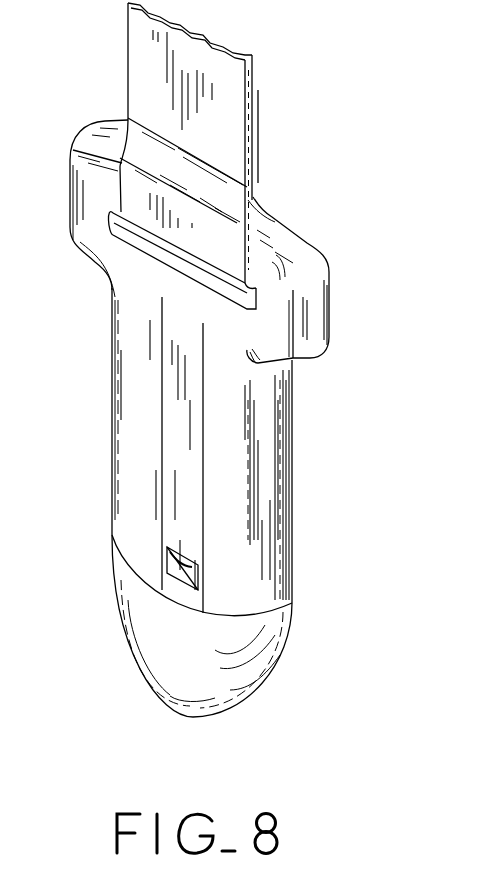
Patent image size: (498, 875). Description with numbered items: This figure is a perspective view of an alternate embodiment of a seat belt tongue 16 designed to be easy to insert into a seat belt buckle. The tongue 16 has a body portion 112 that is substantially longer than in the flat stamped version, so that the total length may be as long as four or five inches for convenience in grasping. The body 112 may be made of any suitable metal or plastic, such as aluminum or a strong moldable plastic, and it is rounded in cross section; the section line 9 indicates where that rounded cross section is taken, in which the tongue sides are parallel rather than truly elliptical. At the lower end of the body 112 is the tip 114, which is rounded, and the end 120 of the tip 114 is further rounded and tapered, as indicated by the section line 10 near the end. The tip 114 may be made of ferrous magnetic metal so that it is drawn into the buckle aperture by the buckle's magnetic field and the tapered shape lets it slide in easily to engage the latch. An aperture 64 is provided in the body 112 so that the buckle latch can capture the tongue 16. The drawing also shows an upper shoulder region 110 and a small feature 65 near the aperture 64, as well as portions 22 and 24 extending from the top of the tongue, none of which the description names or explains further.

The section line 9- 9 is at (70, 490).
The section line 10- 10 is at (188, 430).
The seat belt tongue 16 is at (305, 412).
The strap edge 22 is at (270, 83).
The strap 24 is at (143, 65).
The aperture 64 is at (83, 617).
The tab 65 is at (80, 628).
The shoulder 110 is at (112, 225).
The body portion 112 is at (130, 350).
The tip 114 is at (140, 657).
The end of tip 120 is at (193, 717).